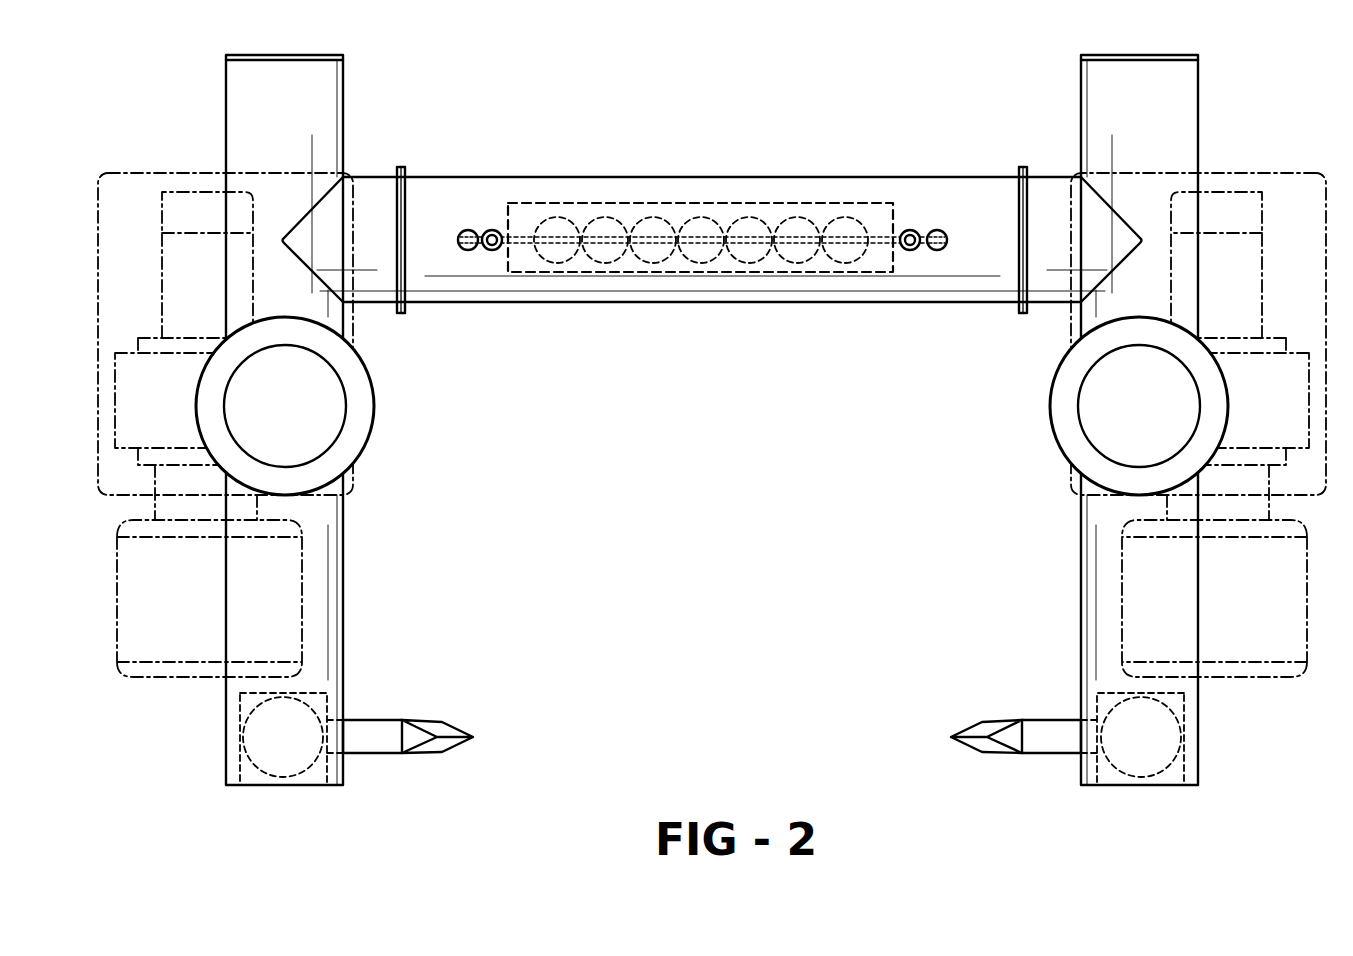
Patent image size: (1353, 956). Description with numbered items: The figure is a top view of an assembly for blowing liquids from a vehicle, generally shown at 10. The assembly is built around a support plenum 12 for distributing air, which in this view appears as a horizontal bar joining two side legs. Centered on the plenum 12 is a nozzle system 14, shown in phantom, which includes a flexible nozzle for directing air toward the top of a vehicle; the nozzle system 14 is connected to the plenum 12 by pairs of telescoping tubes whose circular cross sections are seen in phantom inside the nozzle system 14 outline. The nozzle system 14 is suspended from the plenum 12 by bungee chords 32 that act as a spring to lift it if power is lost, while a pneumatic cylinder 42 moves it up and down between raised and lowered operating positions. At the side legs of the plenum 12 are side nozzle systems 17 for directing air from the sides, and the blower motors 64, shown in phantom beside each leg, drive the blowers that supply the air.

The assembly for blowing liquids from a vehicle 10 is at (701, 418).
The support plenum 12 is at (703, 177).
The nozzle system 14 is at (606, 275).
The bungee chords 32 is at (468, 229).
The pneumatic cylinder 42 is at (492, 229).
The side nozzle systems 17 is at (419, 719).
The blower motor 64 is at (157, 677).